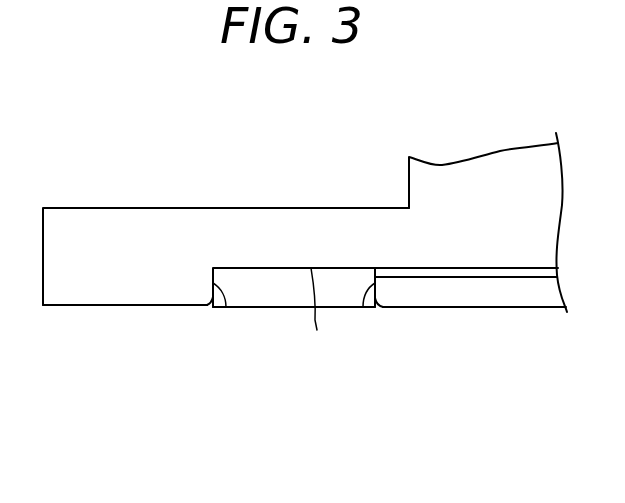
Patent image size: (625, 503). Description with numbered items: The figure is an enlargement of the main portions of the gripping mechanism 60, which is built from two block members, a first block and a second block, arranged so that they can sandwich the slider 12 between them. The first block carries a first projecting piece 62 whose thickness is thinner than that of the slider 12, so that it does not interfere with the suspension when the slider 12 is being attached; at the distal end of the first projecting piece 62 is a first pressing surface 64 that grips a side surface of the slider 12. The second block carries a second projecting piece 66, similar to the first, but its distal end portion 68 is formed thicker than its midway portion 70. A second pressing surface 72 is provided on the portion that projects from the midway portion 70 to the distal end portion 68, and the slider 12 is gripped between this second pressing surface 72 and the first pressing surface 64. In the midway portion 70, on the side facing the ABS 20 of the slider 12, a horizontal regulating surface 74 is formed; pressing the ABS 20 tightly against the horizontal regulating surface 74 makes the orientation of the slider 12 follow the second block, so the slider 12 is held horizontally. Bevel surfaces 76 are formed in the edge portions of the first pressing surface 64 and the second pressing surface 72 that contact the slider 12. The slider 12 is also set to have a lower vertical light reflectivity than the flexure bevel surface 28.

The gripping mechanism 60 is at (323, 182).
The second projecting piece 66 is at (81, 320).
The distal end portion 68 is at (88, 230).
The midway portion 70 is at (373, 223).
The first projecting piece 62 is at (473, 292).
The ABS 20 is at (261, 267).
The slider 12 is at (282, 292).
The horizontal regulating surface 74 is at (322, 313).
The flexure bevel surface 28 is at (248, 310).
The second pressing surface 72 is at (228, 310).
The first pressing surface 64 is at (365, 307).
The bevel surfaces 76 is at (210, 308).